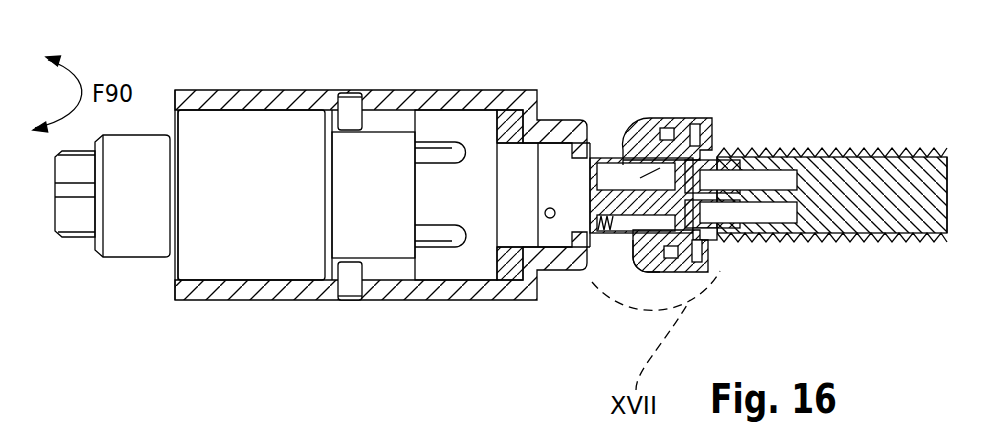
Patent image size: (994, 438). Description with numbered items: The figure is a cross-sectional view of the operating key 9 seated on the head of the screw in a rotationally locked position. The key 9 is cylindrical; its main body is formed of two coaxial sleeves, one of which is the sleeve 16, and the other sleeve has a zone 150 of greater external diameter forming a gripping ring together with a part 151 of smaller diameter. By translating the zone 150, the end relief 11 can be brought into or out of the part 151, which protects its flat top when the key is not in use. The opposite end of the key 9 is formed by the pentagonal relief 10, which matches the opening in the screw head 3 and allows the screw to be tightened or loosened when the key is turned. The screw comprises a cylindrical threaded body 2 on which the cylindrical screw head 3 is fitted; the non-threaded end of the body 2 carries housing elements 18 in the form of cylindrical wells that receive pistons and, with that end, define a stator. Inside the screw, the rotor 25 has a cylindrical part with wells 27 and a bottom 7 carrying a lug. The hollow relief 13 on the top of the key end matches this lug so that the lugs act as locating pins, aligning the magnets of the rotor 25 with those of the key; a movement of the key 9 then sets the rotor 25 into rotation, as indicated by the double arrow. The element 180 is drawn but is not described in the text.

The body 2 is at (915, 175).
The screw head 3 is at (642, 135).
The bottom 7 is at (688, 175).
The key 9 is at (318, 320).
The relief 10 is at (78, 215).
The relief 11 is at (625, 197).
The hollow relief 13 is at (637, 268).
The sleeve 16 is at (282, 98).
The housing elements 18 is at (812, 148).
The rotor 25 is at (792, 178).
The wells 27 is at (712, 168).
The zone 150 is at (447, 262).
The part 151 is at (392, 163).
The shoulder 180 is at (712, 238).